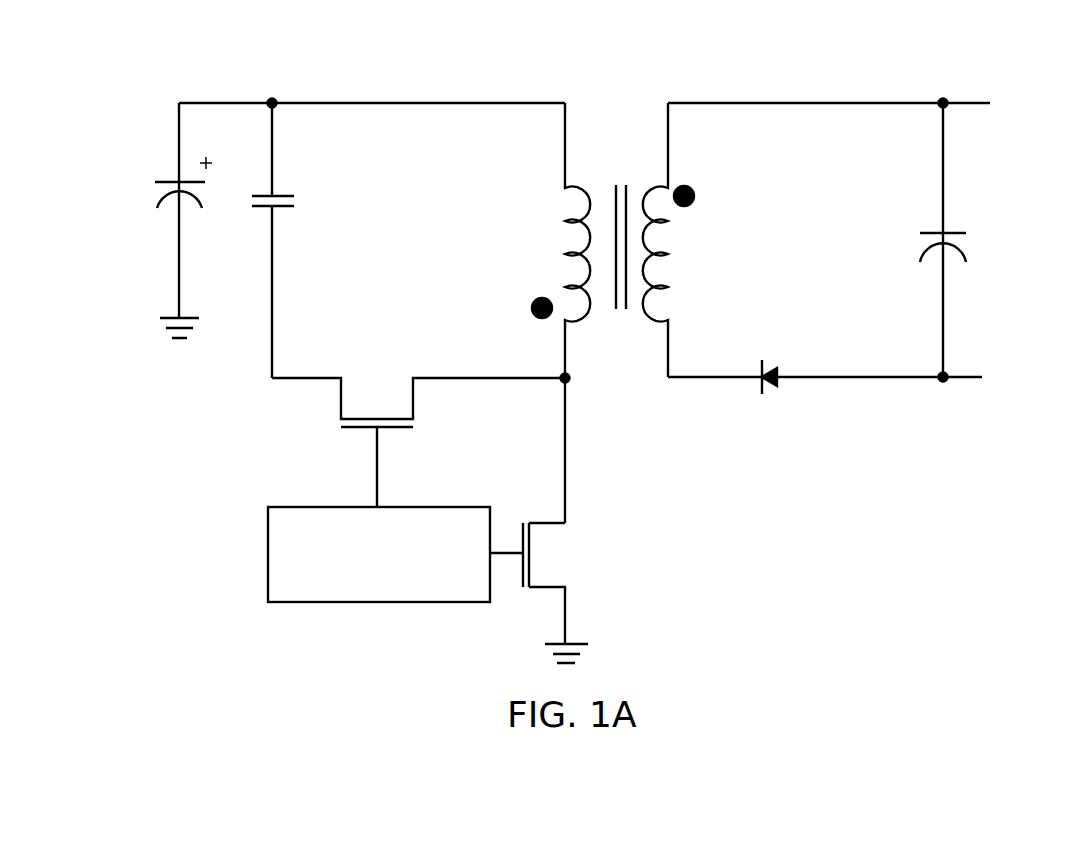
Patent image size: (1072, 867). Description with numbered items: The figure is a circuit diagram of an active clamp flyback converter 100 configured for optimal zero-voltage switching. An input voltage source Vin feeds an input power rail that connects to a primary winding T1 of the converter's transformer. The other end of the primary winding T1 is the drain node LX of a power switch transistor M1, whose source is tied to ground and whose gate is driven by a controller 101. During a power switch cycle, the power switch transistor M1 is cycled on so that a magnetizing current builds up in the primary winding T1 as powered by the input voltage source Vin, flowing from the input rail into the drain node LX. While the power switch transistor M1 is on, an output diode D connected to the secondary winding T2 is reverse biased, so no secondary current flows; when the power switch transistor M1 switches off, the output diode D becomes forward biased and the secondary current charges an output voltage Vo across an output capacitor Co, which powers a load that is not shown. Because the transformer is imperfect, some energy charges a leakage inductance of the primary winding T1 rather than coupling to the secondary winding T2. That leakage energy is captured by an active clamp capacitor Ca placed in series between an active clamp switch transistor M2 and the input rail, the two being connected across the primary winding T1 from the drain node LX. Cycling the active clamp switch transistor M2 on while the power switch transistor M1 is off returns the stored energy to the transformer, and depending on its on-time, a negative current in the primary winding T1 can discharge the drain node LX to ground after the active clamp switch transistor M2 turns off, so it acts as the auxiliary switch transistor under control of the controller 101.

The active clamp flyback converter 100 is at (629, 67).
The controller 101 is at (268, 553).
The input voltage source Vin is at (156, 220).
The active clamp capacitor Ca is at (290, 240).
The active clamp switch transistor M2 is at (418, 424).
The drain node LX is at (584, 384).
The primary winding T1 is at (571, 313).
The secondary winding T2 is at (683, 240).
The output voltage Vo is at (851, 99).
The output capacitor Co is at (966, 240).
The output diode D is at (773, 353).
The power switch transistor M1 is at (549, 593).